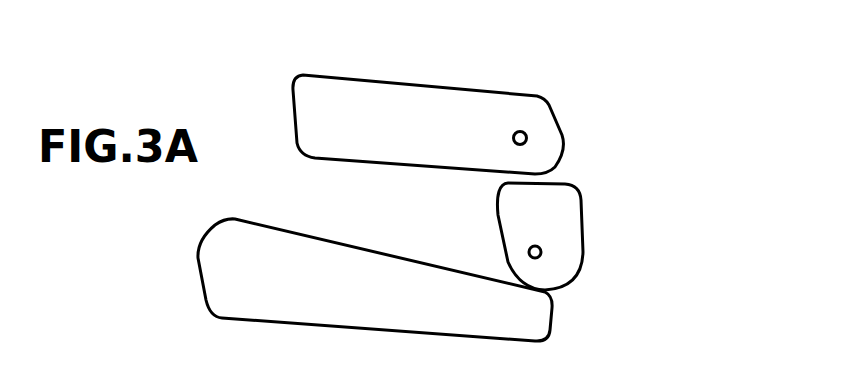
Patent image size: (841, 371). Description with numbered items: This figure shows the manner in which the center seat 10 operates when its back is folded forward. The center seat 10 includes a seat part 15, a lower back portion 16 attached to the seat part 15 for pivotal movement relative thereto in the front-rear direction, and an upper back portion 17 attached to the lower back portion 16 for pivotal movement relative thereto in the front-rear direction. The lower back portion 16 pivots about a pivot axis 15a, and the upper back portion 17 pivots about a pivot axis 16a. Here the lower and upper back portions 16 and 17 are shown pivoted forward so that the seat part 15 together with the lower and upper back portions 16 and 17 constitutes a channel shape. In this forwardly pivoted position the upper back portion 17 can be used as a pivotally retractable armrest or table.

The center seat 10 is at (256, 83).
The seat part 15 is at (313, 237).
The pivot axis of the lower back portion 15a is at (542, 249).
The lower back portion 16 is at (580, 217).
The pivot axis of the upper back portion 16a is at (526, 133).
The upper back portion 17 is at (417, 82).